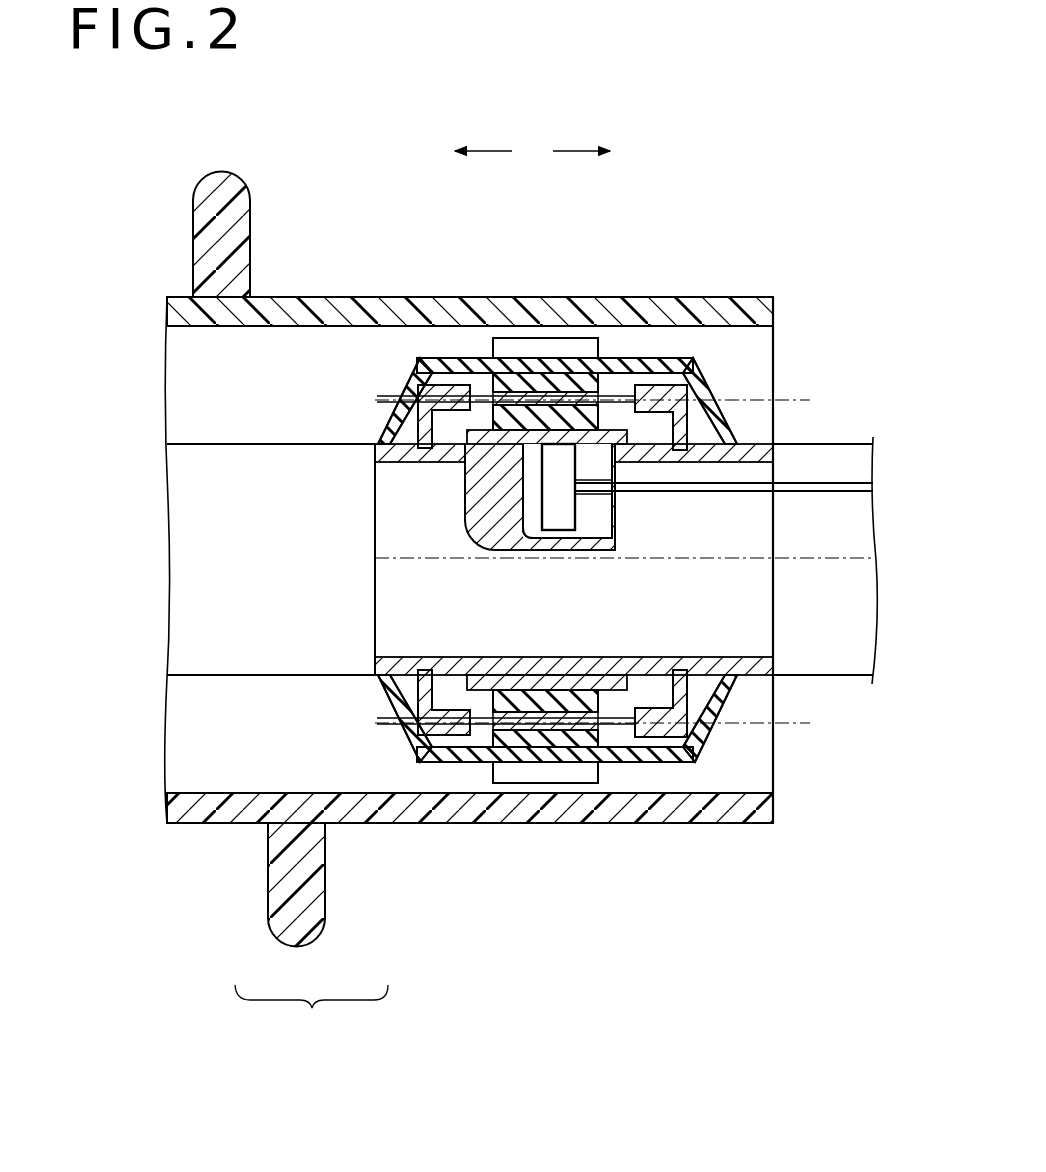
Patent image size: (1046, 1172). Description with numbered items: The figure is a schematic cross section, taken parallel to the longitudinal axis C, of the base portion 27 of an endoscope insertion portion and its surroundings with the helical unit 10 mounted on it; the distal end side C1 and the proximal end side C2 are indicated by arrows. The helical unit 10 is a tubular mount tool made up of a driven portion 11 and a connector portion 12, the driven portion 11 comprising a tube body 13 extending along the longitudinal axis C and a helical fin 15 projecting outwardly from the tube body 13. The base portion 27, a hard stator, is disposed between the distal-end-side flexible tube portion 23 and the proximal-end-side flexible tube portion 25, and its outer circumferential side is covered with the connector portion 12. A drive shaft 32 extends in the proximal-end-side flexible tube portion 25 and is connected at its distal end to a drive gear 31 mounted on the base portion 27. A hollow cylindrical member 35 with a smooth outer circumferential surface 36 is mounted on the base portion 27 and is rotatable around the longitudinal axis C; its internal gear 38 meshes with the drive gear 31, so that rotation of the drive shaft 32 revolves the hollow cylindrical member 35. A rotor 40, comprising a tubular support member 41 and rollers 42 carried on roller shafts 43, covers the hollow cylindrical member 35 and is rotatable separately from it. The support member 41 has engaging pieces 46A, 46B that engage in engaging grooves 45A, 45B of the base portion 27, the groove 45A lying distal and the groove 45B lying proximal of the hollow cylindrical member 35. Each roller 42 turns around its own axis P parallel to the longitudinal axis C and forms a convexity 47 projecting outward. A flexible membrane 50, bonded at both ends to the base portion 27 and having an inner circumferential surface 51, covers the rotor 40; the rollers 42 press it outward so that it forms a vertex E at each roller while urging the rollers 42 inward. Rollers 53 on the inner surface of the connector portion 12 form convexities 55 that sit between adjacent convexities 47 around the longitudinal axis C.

The helical unit 10 is at (311, 1011).
The driven portion 11 is at (205, 832).
The connector portion 12 is at (428, 818).
The tube body 13 is at (292, 297).
The helical fin 15 is at (246, 212).
The distal-end-side flexible tube portion 23 is at (185, 570).
The proximal-end-side flexible tube portion 25 is at (868, 567).
The base portion 27 is at (493, 538).
The drive gear 31 is at (560, 532).
The drive shaft 32 is at (830, 492).
The hollow cylindrical member 35 is at (553, 664).
The outer circumferential surface 36 is at (600, 762).
The internal gear 38 is at (572, 490).
The rotor 40 is at (675, 762).
The support member 41 is at (662, 380).
The roller 42 is at (518, 376).
The roller shaft 43 is at (546, 380).
The engaging groove 45A is at (430, 452).
The engaging groove 45B is at (682, 668).
The engaging piece 46A is at (412, 437).
The engaging piece 46B is at (705, 700).
The convexity 47 is at (587, 412).
The membrane 50 is at (441, 352).
The inner circumferential surface 51 is at (440, 756).
The roller 53 is at (500, 345).
The convexity 55 is at (545, 560).
The longitudinal axis C is at (610, 560).
The distal end side C1 is at (483, 137).
The proximal end side C2 is at (581, 137).
The vertex E is at (565, 400).
The axis P is at (795, 400).